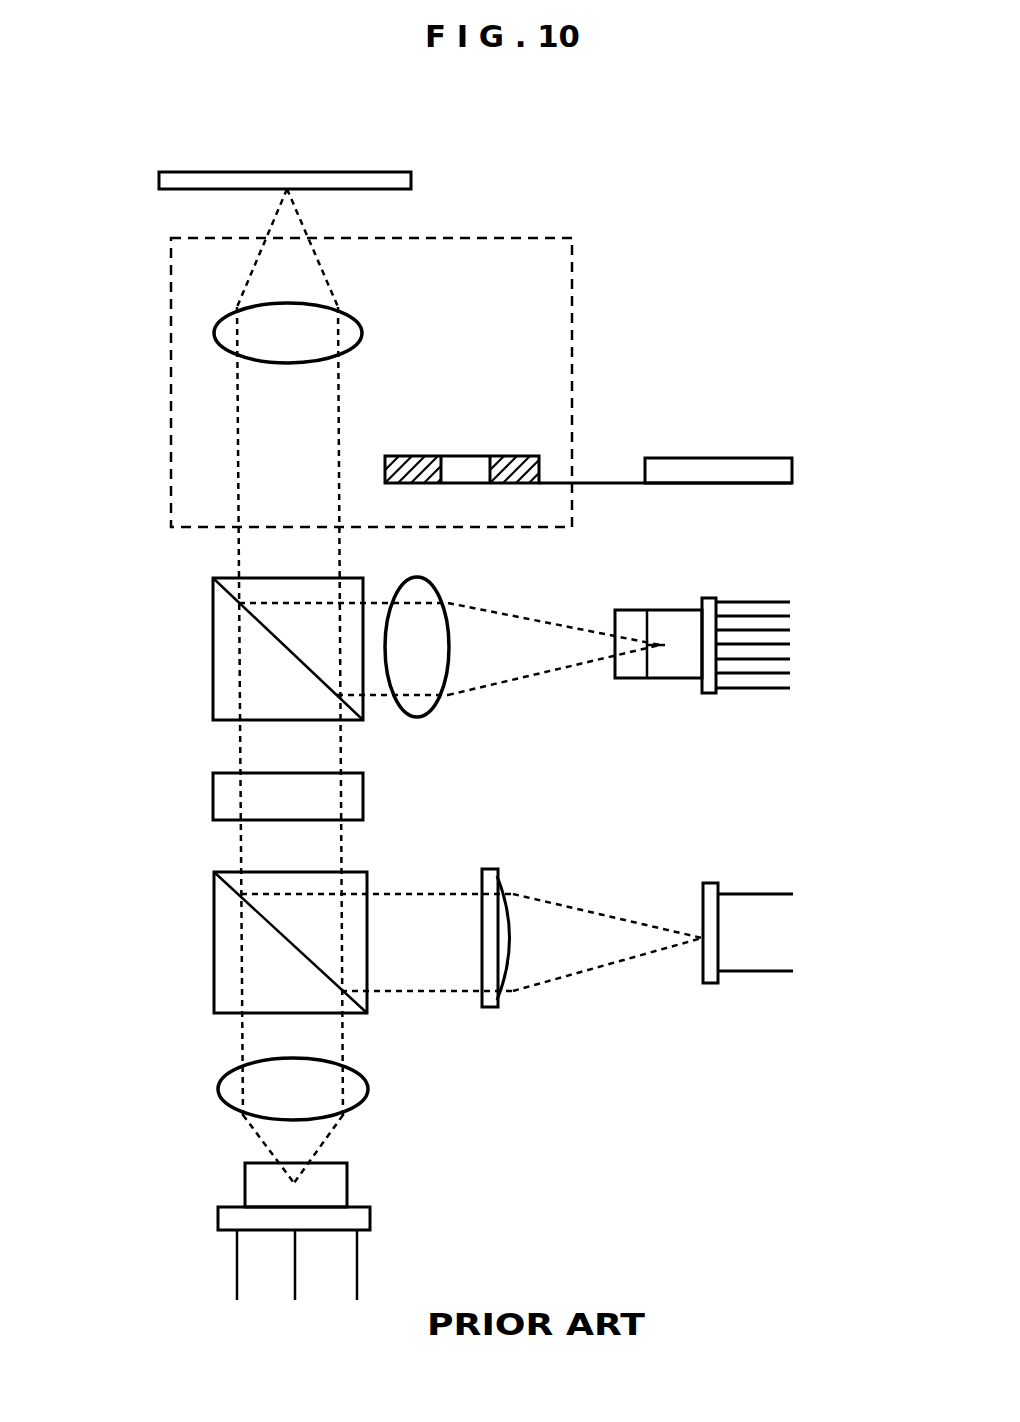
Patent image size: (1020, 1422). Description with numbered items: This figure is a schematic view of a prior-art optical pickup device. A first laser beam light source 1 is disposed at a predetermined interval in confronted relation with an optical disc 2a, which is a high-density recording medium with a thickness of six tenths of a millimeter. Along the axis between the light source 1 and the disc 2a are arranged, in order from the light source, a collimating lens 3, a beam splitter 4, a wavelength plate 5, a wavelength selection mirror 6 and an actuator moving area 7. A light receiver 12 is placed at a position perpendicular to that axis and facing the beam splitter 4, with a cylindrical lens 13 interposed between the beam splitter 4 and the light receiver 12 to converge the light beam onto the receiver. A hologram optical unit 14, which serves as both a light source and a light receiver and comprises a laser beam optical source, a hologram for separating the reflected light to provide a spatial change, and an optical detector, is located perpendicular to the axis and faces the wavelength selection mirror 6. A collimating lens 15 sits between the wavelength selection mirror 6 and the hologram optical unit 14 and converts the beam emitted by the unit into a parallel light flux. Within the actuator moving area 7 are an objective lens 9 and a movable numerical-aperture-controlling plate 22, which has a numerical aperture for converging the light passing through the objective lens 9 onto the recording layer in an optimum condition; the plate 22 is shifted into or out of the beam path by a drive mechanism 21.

The laser beam light source 1 is at (323, 1192).
The optical disc 2a is at (392, 178).
The collimating lens 3 is at (232, 1087).
The beam splitter 4 is at (218, 922).
The wavelength plate 5 is at (217, 793).
The wavelength selection mirror 6 is at (217, 628).
The actuator moving area 7 is at (186, 415).
The objective lens 9 is at (309, 338).
The light receiver 12 is at (755, 915).
The cylindrical lens 13 is at (492, 885).
The hologram optical unit 14 is at (680, 660).
The collimating lens 15 is at (423, 672).
The drive mechanism 21 is at (727, 468).
The movable numerical-aperture-controlling plate 22 is at (472, 467).